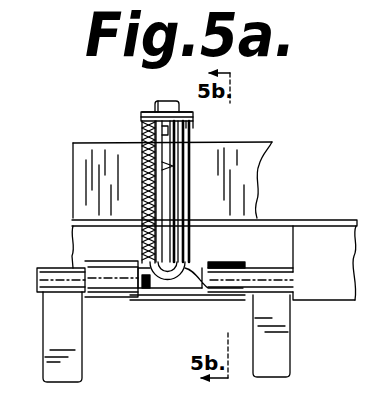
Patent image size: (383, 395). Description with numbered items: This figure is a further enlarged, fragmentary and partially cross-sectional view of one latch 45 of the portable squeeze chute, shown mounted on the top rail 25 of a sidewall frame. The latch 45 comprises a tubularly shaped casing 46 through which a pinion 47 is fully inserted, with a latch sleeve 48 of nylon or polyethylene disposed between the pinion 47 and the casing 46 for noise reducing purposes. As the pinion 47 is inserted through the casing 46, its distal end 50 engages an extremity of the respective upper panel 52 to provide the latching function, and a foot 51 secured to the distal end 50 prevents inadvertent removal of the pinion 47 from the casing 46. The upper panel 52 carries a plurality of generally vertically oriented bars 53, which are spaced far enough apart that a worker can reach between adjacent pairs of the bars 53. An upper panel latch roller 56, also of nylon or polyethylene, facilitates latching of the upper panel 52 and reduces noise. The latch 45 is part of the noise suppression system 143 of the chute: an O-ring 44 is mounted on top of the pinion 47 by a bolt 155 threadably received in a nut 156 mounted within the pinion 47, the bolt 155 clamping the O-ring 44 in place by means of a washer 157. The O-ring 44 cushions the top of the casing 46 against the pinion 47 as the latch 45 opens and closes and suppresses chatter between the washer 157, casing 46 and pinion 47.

The top rail 25 is at (255, 167).
The O-ring 44 is at (141, 124).
The latch 45 is at (126, 115).
The casing 46 is at (193, 132).
The pinion 47 is at (190, 253).
The latch sleeve 48 is at (142, 238).
The distal end 50 is at (175, 297).
The foot 51 is at (211, 297).
The upper panel 52 is at (294, 272).
The bars 53 is at (66, 333).
The upper panel latch roller 56 is at (144, 302).
The noise suppression system 143 is at (266, 253).
The bolt 155 is at (160, 101).
The nut 156 is at (141, 133).
The washer 157 is at (193, 117).